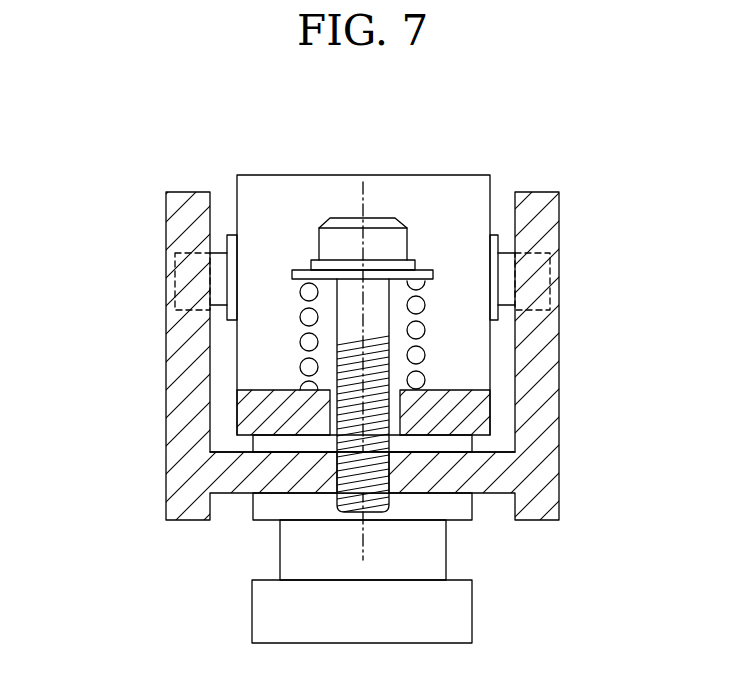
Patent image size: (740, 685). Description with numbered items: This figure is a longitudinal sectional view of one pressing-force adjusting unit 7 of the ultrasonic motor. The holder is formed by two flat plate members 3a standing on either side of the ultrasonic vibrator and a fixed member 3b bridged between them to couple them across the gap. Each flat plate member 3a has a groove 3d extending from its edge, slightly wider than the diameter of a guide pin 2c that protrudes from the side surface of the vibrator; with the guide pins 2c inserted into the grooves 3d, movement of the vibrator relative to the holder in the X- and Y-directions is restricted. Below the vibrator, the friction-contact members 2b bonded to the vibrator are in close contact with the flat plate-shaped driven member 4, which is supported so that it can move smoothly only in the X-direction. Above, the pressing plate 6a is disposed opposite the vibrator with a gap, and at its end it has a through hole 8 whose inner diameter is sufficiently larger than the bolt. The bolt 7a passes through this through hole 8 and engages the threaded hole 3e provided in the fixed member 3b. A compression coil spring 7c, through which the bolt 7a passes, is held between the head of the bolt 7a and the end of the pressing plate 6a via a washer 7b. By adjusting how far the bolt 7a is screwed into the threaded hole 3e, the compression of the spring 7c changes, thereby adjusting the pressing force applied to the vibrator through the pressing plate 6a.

The friction-contact member 2b is at (447, 555).
The guide pin 2c is at (217, 248).
The flat plate member 3a is at (166, 372).
The fixed member 3b is at (233, 452).
The groove 3d is at (175, 304).
The threaded hole 3e is at (376, 480).
The driven member 4 is at (473, 611).
The pressing plate 6a is at (458, 175).
The pressing-force adjusting unit 7 is at (361, 242).
The bolt 7a is at (410, 240).
The washer 7b is at (302, 270).
The compression coil spring 7c is at (308, 318).
The through hole 8 is at (395, 394).